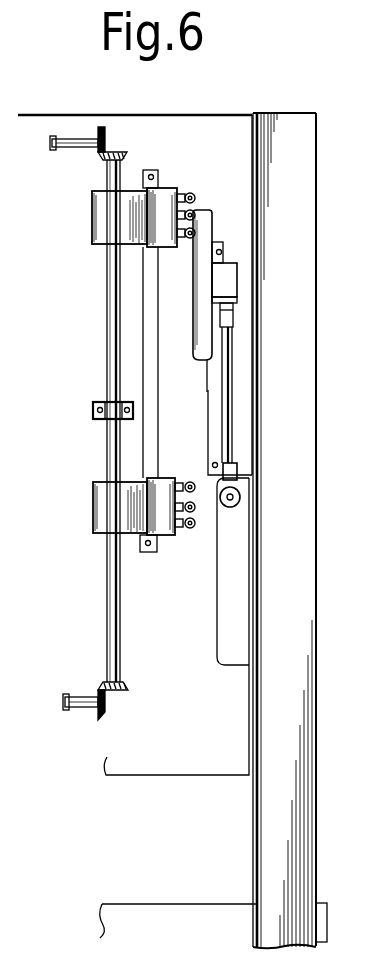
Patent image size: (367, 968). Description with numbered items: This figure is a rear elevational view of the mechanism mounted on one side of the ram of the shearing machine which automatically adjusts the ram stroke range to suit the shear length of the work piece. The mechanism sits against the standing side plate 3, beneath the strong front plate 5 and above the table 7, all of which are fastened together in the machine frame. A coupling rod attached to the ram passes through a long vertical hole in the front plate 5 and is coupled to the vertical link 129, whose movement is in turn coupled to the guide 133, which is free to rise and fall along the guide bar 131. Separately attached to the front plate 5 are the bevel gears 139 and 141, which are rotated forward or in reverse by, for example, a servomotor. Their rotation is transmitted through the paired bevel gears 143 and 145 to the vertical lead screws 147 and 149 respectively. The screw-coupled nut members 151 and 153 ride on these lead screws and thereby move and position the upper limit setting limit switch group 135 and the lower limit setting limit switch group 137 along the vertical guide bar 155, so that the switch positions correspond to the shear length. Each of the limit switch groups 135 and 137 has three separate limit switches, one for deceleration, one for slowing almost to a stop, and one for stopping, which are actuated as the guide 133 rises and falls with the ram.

The side plates 3 is at (301, 346).
The front plate 5 is at (213, 120).
The table 7 is at (132, 916).
The vertical link 129 is at (234, 412).
The guide bar 131 is at (207, 392).
The guide 133 is at (203, 226).
The upper limit setting limit switch group 135 is at (164, 203).
The lower limit setting limit switch group 137 is at (170, 522).
The bevel gear 139 is at (70, 147).
The bevel gear 141 is at (80, 708).
The bevel gear 143 is at (108, 153).
The bevel gear 145 is at (112, 703).
The vertical lead screw 147 is at (110, 285).
The vertical lead screw 149 is at (112, 433).
The nut member 151 is at (105, 217).
The nut member 153 is at (101, 507).
The vertical guide bar 155 is at (150, 326).